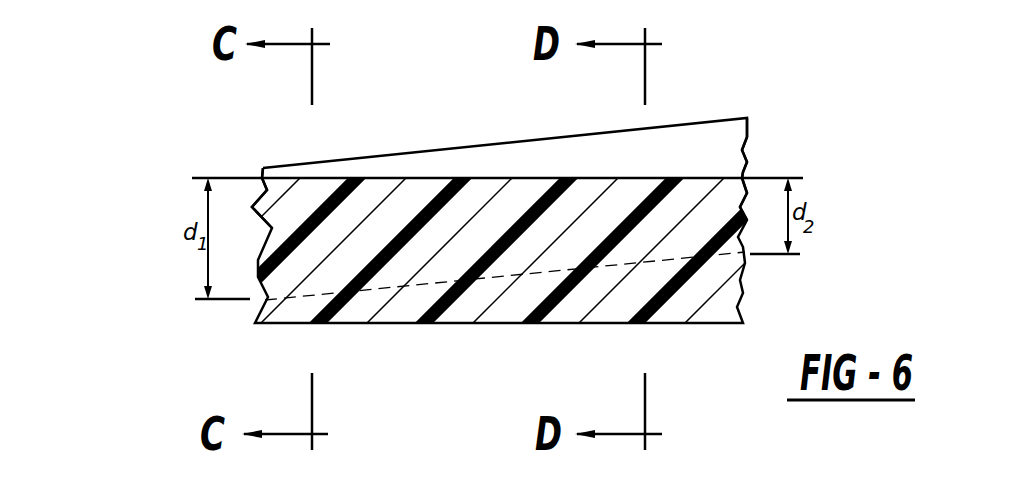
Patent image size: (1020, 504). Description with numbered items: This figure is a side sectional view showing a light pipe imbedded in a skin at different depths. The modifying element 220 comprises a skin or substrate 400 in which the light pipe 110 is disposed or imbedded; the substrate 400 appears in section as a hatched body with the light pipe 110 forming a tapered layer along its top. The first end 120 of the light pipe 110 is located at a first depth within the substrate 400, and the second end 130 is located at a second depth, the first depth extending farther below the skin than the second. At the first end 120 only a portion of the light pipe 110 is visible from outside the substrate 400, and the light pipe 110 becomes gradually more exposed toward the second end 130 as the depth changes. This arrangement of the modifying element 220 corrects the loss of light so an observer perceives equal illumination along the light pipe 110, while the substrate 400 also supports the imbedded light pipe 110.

The light pipe 110 is at (482, 126).
The first end 120 is at (241, 157).
The second end 130 is at (770, 144).
The modifying element 220 is at (476, 249).
The substrate 400 is at (642, 302).